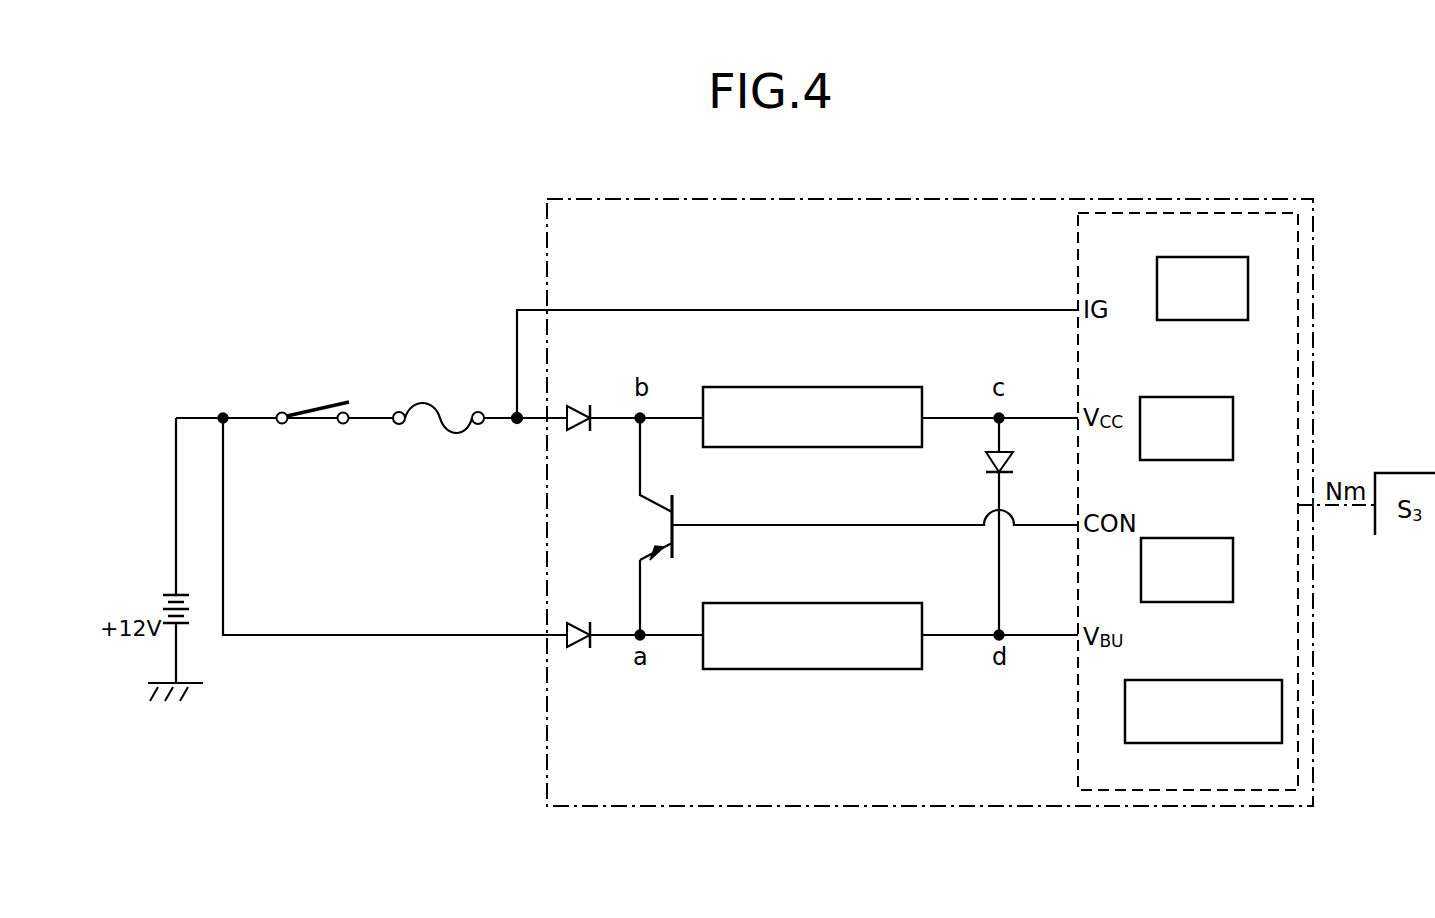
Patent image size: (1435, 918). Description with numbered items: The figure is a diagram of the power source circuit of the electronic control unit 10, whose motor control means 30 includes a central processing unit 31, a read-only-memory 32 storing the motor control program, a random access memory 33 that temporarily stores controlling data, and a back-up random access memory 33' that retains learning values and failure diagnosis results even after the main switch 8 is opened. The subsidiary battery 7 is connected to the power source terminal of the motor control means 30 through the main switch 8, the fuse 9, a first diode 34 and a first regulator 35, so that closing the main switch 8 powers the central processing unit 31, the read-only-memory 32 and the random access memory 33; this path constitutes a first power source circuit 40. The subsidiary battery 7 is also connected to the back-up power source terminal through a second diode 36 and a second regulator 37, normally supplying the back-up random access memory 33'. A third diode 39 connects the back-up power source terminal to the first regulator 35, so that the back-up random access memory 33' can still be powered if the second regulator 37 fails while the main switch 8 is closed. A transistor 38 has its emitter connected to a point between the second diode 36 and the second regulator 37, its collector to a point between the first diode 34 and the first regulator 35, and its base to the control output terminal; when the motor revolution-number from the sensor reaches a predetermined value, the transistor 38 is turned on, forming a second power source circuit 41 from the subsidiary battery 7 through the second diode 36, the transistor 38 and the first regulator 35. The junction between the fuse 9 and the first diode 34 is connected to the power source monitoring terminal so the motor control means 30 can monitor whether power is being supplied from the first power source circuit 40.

The subsidiary battery 7 is at (161, 602).
The main switch 8 is at (323, 409).
The fuse 9 is at (438, 409).
The electronic control unit 10 is at (547, 214).
The motor control means 30 is at (1078, 265).
The central processing unit 31 is at (1230, 257).
The read-only-memory 32 is at (1223, 397).
The random access memory 33 is at (1204, 548).
The back-up random access memory 33' is at (1203, 682).
The first diode 34 is at (579, 406).
The first regulator 35 is at (920, 387).
The second diode 36 is at (572, 650).
The second regulator 37 is at (922, 669).
The transistor 38 is at (660, 518).
The third diode 39 is at (984, 459).
The first power source circuit 40 is at (500, 395).
The second power source circuit 41 is at (655, 598).